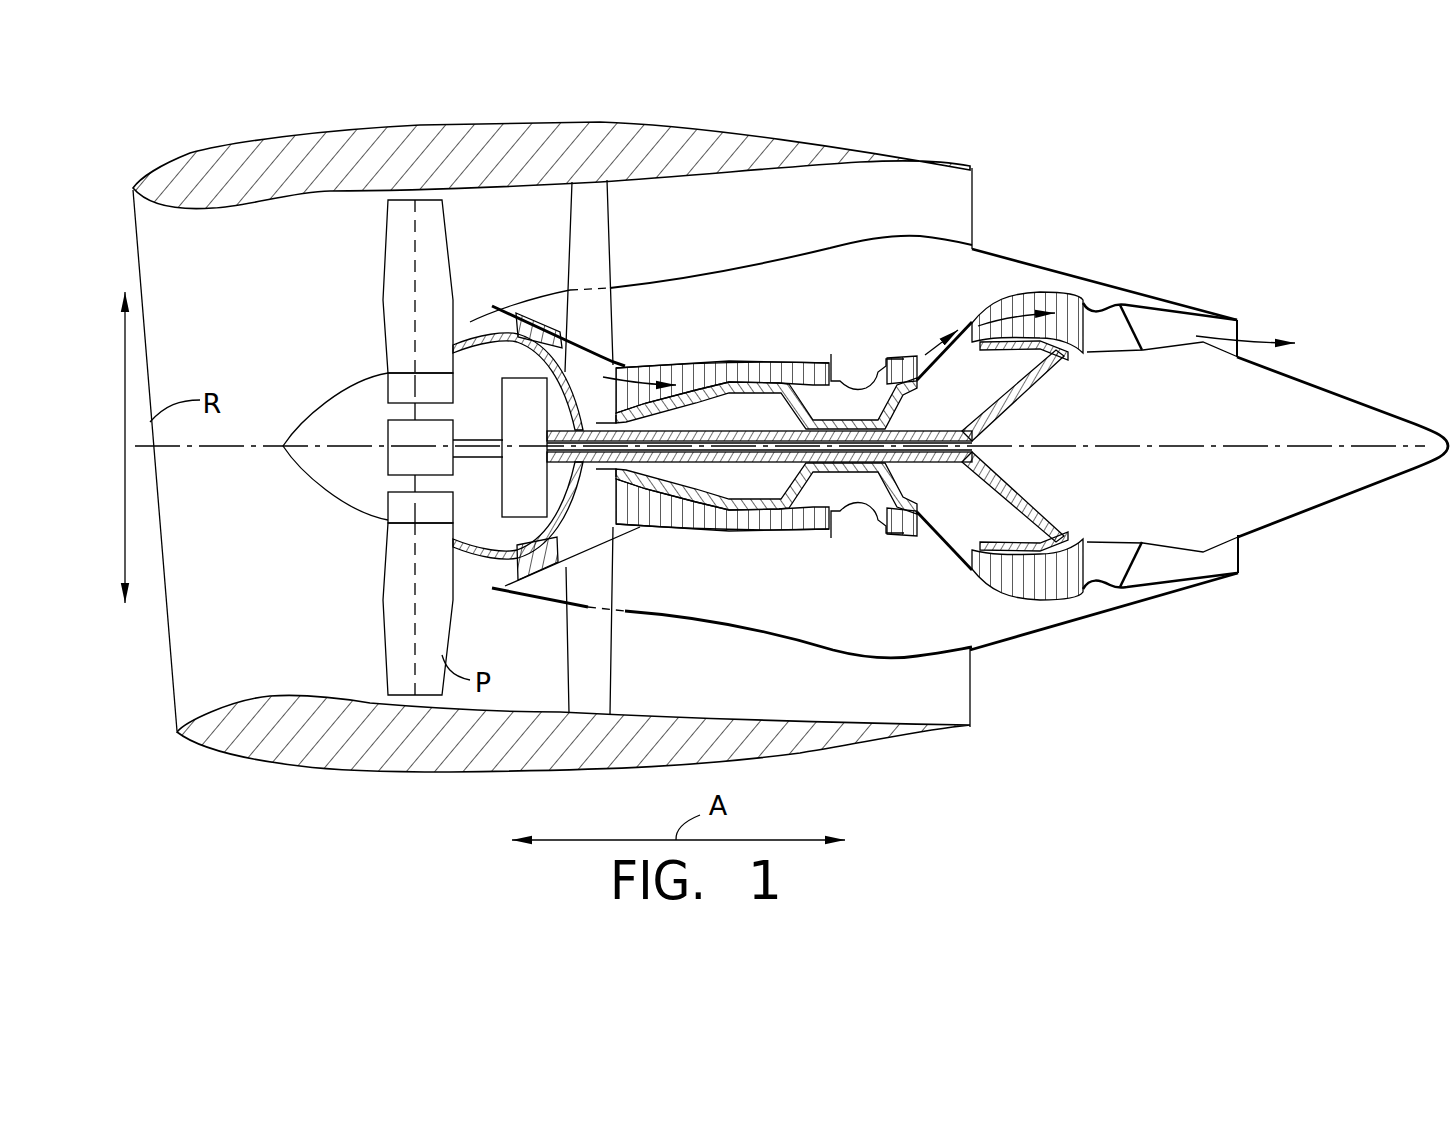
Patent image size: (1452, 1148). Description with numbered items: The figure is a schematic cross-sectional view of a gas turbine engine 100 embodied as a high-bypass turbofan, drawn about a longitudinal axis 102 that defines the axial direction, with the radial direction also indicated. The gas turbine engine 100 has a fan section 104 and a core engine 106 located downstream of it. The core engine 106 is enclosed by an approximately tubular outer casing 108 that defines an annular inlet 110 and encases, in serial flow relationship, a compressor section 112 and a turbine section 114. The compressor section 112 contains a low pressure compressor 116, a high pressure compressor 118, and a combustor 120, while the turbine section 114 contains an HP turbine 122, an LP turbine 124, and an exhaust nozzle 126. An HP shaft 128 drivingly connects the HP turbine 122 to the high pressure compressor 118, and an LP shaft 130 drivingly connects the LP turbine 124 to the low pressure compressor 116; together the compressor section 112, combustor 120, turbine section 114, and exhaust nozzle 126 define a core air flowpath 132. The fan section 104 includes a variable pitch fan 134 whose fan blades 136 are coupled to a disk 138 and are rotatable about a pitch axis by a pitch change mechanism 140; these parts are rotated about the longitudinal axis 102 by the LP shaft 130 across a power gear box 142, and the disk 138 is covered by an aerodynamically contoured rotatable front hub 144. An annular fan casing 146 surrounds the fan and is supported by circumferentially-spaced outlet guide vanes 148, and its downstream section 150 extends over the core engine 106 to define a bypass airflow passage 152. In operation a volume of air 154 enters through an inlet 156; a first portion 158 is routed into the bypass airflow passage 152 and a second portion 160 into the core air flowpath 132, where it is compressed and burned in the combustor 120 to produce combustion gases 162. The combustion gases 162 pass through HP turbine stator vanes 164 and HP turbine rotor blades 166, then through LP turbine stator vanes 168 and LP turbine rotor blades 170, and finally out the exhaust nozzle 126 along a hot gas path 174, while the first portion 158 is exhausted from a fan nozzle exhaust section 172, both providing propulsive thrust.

The gas turbine engine 100 is at (1143, 157).
The longitudinal axis 102 is at (1168, 446).
The fan section 104 is at (290, 238).
The core engine 106 is at (790, 330).
The outer casing 108 is at (805, 642).
The annular inlet 110 is at (497, 577).
The compressor section 112 is at (737, 528).
The turbine section 114 is at (1023, 622).
The low pressure compressor 116 is at (550, 582).
The high pressure compressor 118 is at (650, 525).
The combustor 120 is at (850, 528).
The HP turbine 122 is at (922, 530).
The LP turbine 124 is at (1068, 600).
The exhaust nozzle 126 is at (1137, 580).
The HP shaft 128 is at (885, 418).
The LP shaft 130 is at (992, 403).
The core air flowpath 132 is at (587, 545).
The variable pitch fan 134 is at (338, 507).
The fan blades 136 is at (445, 667).
The disk 138 is at (403, 388).
The pitch change mechanism 140 is at (400, 437).
The power gear box 142 is at (533, 402).
The rotatable front hub 144 is at (295, 465).
The annular fan casing 146 is at (437, 767).
The outlet guide vanes 148 is at (613, 232).
The downstream section 150 is at (860, 152).
The bypass airflow passage 152 is at (724, 220).
The volume of air 154 is at (302, 310).
The inlet 156 is at (172, 712).
The first portion 158 is at (503, 233).
The second portion 160 is at (570, 354).
The combustion gases 162 is at (1017, 310).
The HP turbine stator vanes 164 is at (868, 522).
The HP turbine rotor blades 166 is at (897, 510).
The LP turbine stator vanes 168 is at (985, 575).
The LP turbine rotor blades 170 is at (990, 598).
The fan nozzle exhaust section 172 is at (973, 190).
The hot gas path 174 is at (962, 318).